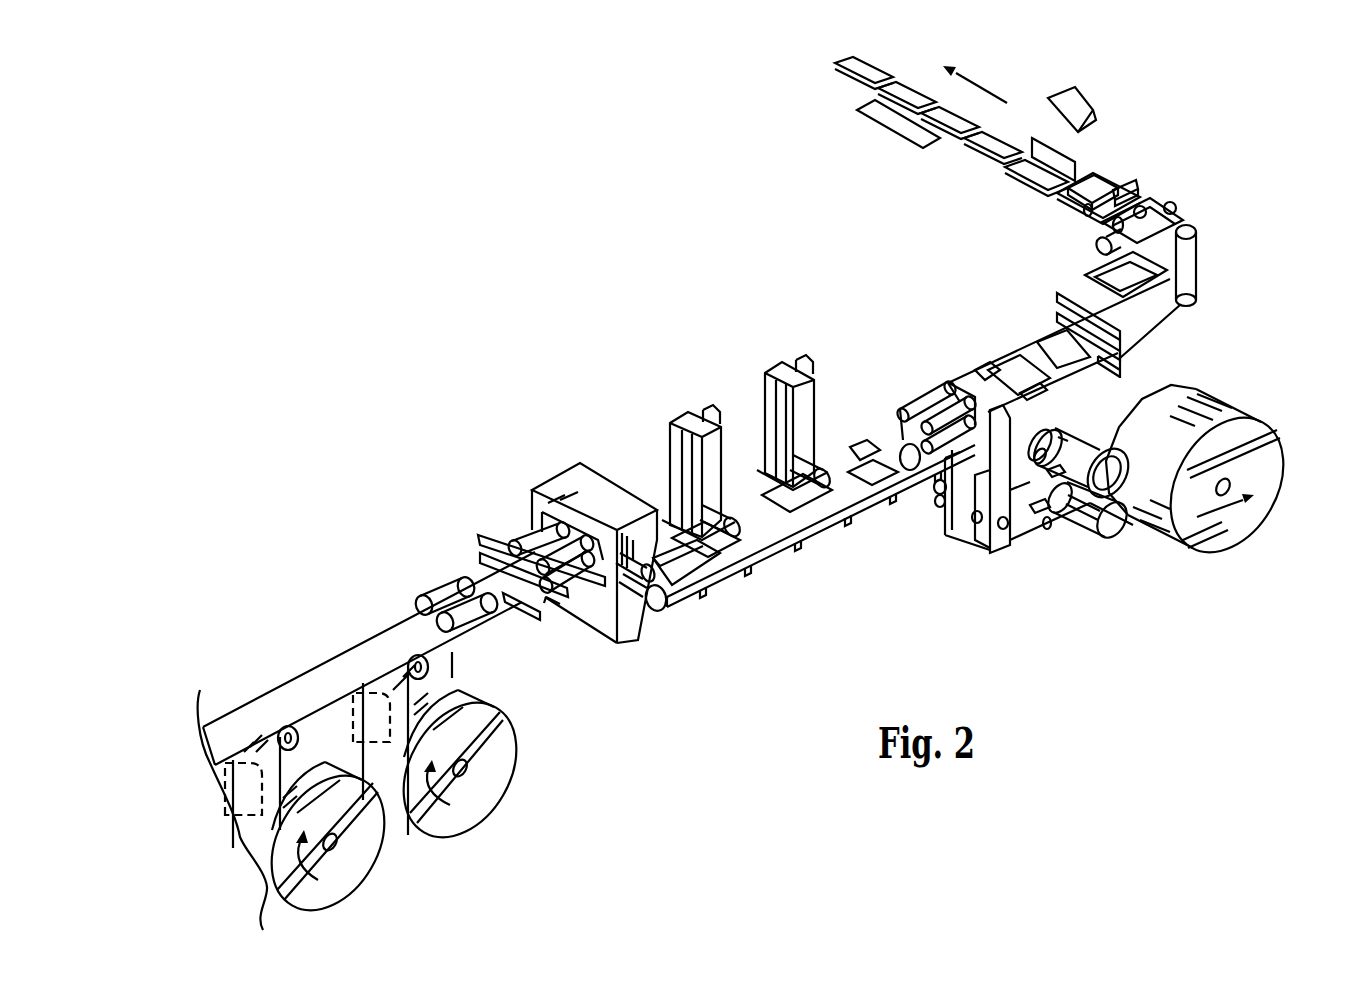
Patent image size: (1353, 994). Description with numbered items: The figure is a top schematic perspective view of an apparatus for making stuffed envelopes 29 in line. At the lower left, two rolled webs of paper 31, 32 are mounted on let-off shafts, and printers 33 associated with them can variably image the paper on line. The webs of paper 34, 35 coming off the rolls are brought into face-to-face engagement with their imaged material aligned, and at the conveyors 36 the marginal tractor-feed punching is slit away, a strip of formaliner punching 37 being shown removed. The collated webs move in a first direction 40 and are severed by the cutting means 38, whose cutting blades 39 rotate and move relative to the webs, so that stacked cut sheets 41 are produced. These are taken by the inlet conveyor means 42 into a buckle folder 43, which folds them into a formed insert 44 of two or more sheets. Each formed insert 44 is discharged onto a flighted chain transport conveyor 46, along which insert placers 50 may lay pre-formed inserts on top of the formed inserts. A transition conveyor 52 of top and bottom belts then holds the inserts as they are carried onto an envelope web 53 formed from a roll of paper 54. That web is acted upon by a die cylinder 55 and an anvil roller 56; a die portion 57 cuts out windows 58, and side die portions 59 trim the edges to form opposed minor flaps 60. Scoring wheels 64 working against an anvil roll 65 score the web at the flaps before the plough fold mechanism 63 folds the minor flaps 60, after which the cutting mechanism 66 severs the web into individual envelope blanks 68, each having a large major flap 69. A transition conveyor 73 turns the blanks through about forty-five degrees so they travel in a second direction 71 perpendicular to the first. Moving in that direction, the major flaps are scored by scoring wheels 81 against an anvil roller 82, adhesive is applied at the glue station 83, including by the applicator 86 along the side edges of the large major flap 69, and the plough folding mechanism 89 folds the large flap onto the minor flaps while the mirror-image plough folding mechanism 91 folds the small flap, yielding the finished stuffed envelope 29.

The stuffed envelope 29 is at (827, 56).
The rolled web of paper 31 is at (347, 872).
The rolled web of paper 32 is at (440, 818).
The printer 33 is at (240, 765).
The web of paper 34 is at (300, 741).
The web of paper 35 is at (410, 706).
The conveyor 36 is at (426, 571).
The strip of formaliner punching 37 is at (458, 656).
The cutting means 38 is at (562, 608).
The cutting blade 39 is at (480, 537).
The first direction 40 is at (335, 674).
The stacked cut sheets 41 is at (543, 537).
The inlet conveyor means 42 is at (633, 637).
The buckle folder 43 is at (573, 484).
The formed insert 44 is at (683, 592).
The flighted chain transport conveyor 46 is at (826, 540).
The insert placer 50 is at (686, 398).
The transition conveyor 52 is at (928, 376).
The envelope web 53 is at (1006, 442).
The roll of paper 54 is at (1283, 452).
The die cylinder 55 is at (1088, 430).
The anvil roller 56 is at (1113, 537).
The die portion 57 is at (1110, 440).
The window 58 is at (962, 455).
The die portion 59 is at (1035, 456).
The minor flap 60 is at (1047, 473).
The plough fold mechanism 63 is at (1003, 356).
The scoring wheel 64 is at (967, 523).
The anvil roll 65 is at (1005, 540).
The cutting mechanism 66 is at (1040, 288).
The envelope blank 68 is at (1114, 165).
The large major flap 69 is at (1033, 150).
The second direction 71 is at (990, 90).
The transition conveyor 73 is at (1208, 262).
The scoring wheel 81 is at (1138, 202).
The anvil roller 82 is at (1096, 248).
The glue station 83 is at (1043, 215).
The glue applicator 86 is at (1128, 186).
The plough folding mechanism 89 is at (1071, 84).
The plough folding mechanism 91 is at (886, 142).